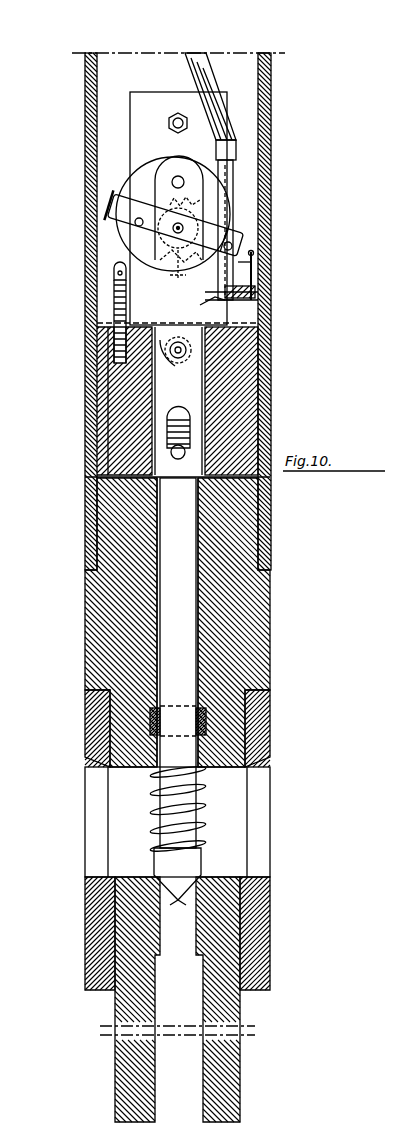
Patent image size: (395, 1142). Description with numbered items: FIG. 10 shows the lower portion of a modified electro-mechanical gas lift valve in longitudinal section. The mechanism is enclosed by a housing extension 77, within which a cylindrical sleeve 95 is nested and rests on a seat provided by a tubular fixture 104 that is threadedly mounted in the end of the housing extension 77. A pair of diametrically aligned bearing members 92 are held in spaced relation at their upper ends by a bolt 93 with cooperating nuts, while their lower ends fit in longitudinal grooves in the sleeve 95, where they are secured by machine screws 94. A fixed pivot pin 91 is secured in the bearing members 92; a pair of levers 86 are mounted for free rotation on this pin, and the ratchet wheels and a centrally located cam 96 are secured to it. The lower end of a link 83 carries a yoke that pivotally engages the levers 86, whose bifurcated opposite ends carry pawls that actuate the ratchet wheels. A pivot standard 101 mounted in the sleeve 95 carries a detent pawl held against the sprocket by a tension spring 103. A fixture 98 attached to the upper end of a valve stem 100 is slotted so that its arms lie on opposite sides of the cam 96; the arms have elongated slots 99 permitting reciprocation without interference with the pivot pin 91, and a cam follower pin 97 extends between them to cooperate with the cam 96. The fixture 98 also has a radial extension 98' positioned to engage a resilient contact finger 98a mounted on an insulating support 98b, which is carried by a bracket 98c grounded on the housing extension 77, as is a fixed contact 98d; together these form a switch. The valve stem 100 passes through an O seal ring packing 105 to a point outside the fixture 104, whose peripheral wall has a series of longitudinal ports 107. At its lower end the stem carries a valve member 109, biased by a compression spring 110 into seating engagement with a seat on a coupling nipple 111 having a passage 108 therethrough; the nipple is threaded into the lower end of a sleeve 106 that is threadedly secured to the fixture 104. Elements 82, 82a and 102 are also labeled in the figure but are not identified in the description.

The housing extension 77 is at (272, 128).
The bearing members 92 is at (148, 102).
The link 83 is at (207, 60).
The bolt 93 is at (168, 122).
The cam 96 is at (152, 176).
The cam follower pin 97 is at (185, 182).
The actuating rod 82 is at (235, 192).
The pivot pin 91 is at (150, 236).
The elongated slots 99 is at (240, 232).
The levers 86 is at (186, 229).
The insulating support 98b is at (252, 280).
The bracket 98c is at (256, 292).
The radial extension 98' is at (264, 304).
The resilient contact finger 98a is at (175, 280).
The link 102 is at (200, 305).
The tension spring 103 is at (112, 303).
The plate 82a is at (262, 320).
The cylindrical sleeve 95 is at (100, 457).
The pivot standard 101 is at (100, 352).
The fixture 98 is at (240, 369).
The fixed contact 98d is at (200, 398).
The machine screws 94 is at (270, 357).
The fixture 104 is at (105, 600).
The valve stem 100 is at (180, 525).
The O seal ring packing 105 is at (155, 718).
The sleeve 106 is at (95, 752).
The longitudinal ports 107 is at (258, 827).
The compression spring 110 is at (152, 797).
The valve member 109 is at (160, 865).
The coupling nipple 111 is at (242, 1010).
The passage 108 is at (205, 905).